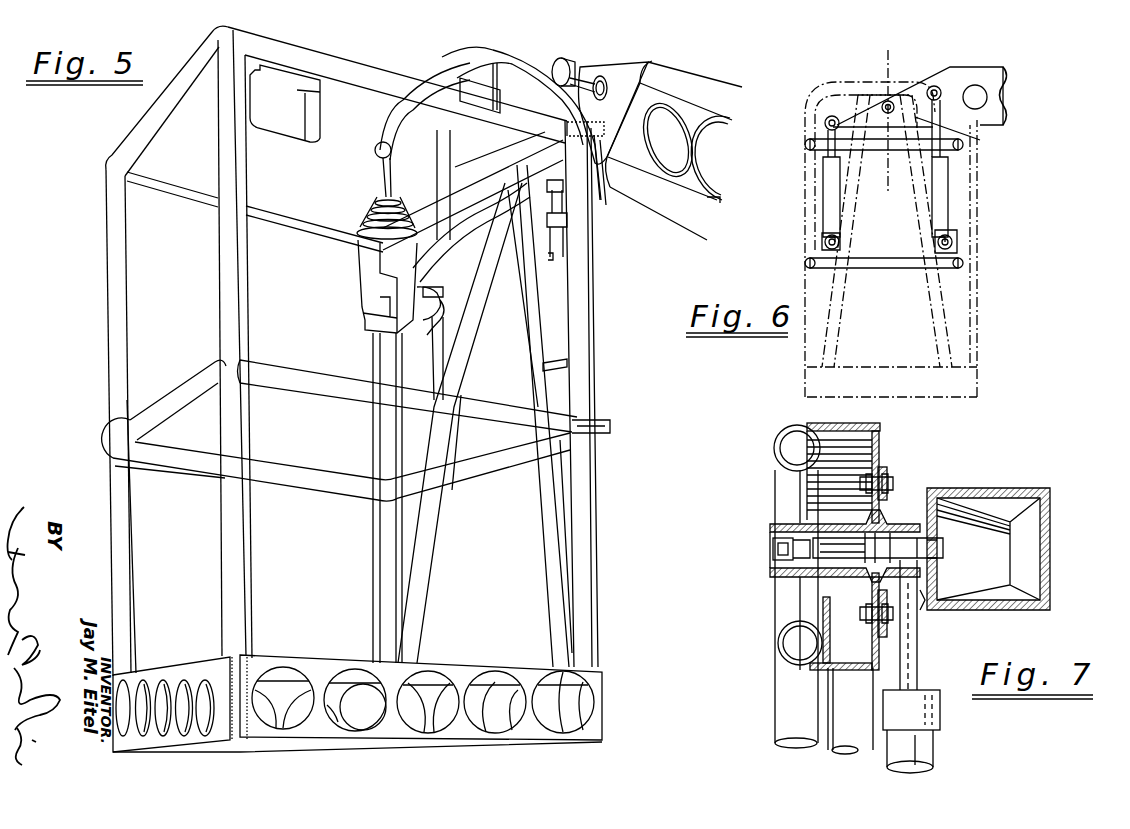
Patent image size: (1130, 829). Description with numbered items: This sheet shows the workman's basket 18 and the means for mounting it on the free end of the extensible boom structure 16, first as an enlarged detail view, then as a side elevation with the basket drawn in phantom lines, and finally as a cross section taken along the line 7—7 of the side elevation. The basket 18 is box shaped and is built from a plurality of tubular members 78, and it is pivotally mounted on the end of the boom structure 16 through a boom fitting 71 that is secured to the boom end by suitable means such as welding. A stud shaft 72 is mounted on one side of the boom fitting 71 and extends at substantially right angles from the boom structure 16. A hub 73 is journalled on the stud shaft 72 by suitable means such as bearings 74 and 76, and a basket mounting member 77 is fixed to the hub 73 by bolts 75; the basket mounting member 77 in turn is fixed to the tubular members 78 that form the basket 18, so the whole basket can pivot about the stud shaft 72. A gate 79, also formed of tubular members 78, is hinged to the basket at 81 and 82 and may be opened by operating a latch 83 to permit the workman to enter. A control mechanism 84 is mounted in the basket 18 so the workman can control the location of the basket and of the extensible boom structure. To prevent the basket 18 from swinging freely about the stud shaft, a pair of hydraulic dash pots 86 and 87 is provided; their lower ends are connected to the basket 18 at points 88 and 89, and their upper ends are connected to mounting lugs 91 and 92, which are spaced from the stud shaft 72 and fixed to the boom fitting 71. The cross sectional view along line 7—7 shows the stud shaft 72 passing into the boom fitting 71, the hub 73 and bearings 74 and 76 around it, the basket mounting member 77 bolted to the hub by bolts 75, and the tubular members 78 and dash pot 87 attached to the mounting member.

In FIG. 6, the section line 7— 7 is at (792, 189).
In FIG. 5, the extensible boom structure 16 is at (718, 76).
In FIG. 5, the workman's basket 18 is at (98, 442).
In FIG. 5, the boom fitting 71 is at (630, 70).
In FIG. 7, the boom fitting 71 is at (1048, 497).
In FIG. 6, the stud shaft 72 is at (893, 108).
In FIG. 7, the stud shaft 72 is at (910, 542).
In FIG. 7, the hub 73 is at (890, 510).
In FIG. 7, the bearing 74 is at (907, 603).
In FIG. 7, the bolts 75 is at (887, 500).
In FIG. 7, the bearing 76 is at (795, 582).
In FIG. 5, the basket mounting member 77 is at (507, 90).
In FIG. 7, the basket mounting member 77 is at (878, 436).
In FIG. 5, the tubular members 78 is at (593, 552).
In FIG. 7, the tubular members 78 is at (775, 448).
In FIG. 5, the gate 79 is at (315, 358).
In FIG. 5, the hinge 81 is at (620, 437).
In FIG. 5, the hinge 82 is at (594, 165).
In FIG. 5, the latch 83 is at (327, 147).
In FIG. 5, the control mechanism 84 is at (367, 267).
In FIG. 5, the hydraulic dash pot 86 is at (551, 256).
In FIG. 6, the hydraulic dash pot 86 is at (945, 193).
In FIG. 5, the hydraulic dash pot 87 is at (443, 340).
In FIG. 6, the hydraulic dash pot 87 is at (828, 208).
In FIG. 7, the hydraulic dash pot 87 is at (917, 748).
In FIG. 6, the connection point 88 is at (950, 238).
In FIG. 6, the connection point 89 is at (826, 243).
In FIG. 6, the mounting lug 91 is at (935, 84).
In FIG. 6, the mounting lug 92 is at (832, 112).
In FIG. 7, the mounting lug 92 is at (925, 593).